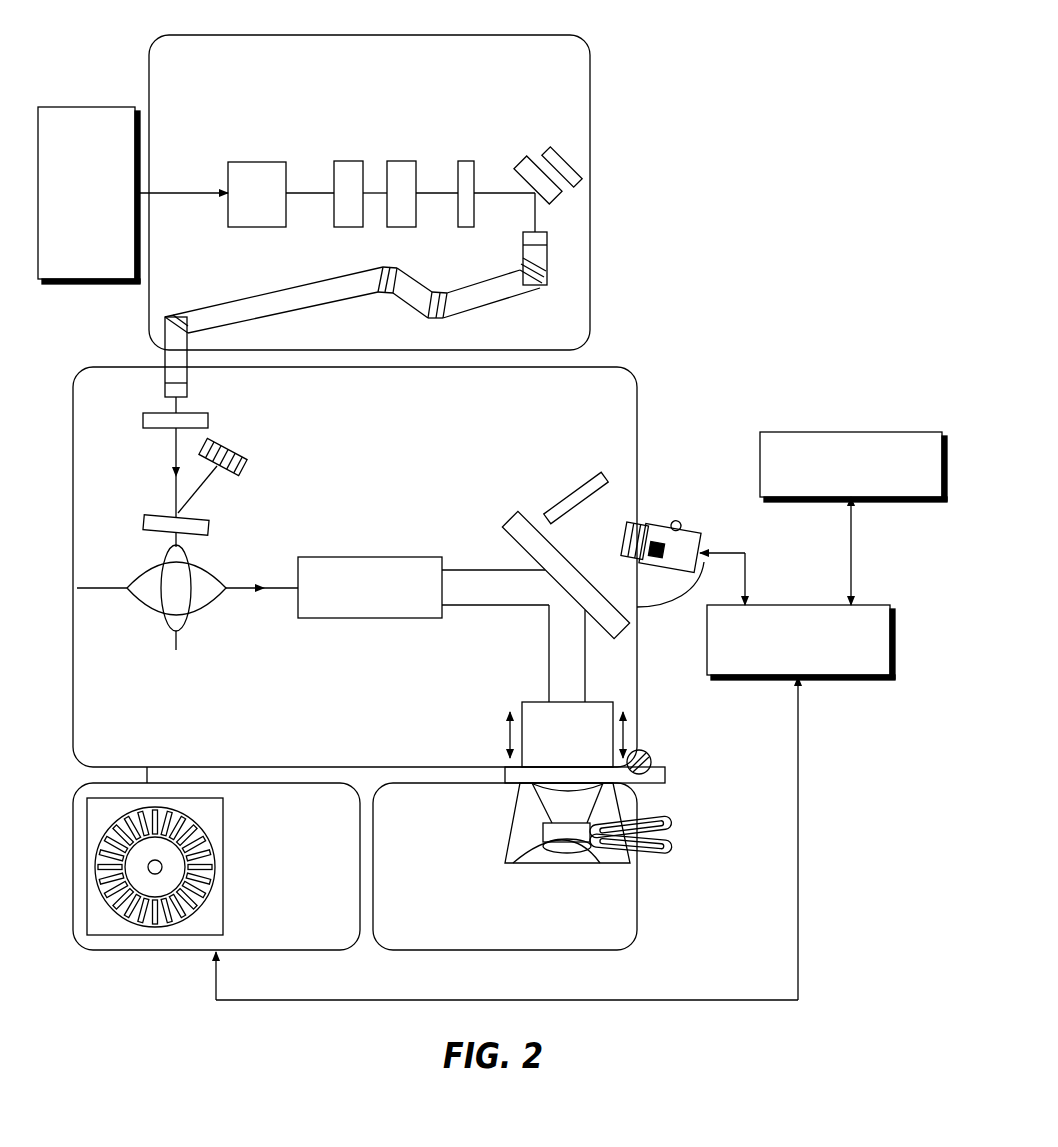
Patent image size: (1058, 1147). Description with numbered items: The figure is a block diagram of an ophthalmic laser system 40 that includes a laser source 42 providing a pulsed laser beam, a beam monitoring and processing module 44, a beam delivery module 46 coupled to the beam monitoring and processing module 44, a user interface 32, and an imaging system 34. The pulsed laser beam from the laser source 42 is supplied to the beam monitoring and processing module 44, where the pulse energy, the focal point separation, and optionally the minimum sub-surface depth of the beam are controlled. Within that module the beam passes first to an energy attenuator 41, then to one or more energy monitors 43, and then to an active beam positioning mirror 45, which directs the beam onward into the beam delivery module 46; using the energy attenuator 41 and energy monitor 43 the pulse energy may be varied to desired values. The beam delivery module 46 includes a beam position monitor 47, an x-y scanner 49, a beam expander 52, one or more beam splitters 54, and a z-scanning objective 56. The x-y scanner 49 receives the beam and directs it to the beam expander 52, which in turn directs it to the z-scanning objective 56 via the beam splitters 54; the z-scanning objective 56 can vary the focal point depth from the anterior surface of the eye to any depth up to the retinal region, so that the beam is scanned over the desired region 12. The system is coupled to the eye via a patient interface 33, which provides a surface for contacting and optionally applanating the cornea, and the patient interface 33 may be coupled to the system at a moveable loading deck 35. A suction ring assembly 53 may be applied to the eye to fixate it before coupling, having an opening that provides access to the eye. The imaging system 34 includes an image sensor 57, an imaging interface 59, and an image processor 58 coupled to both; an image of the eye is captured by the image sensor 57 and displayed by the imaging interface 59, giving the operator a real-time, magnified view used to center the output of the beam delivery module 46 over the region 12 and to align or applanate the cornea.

The region 12 is at (569, 868).
The user interface 32 is at (110, 953).
The patient interface 33 is at (605, 812).
The imaging system 34 is at (747, 377).
The moveable loading deck 35 is at (657, 757).
The ophthalmic laser system 40 is at (652, 147).
The energy attenuator 41 is at (244, 210).
The laser source 42 is at (65, 105).
The energy monitor 43 is at (347, 160).
The beam monitoring and processing module 44 is at (172, 112).
The active beam positioning mirror 45 is at (565, 145).
The beam delivery module 46 is at (361, 455).
The beam position monitor 47 is at (248, 468).
The x-y scanner 49 is at (150, 622).
The beam expander 52 is at (357, 601).
The suction ring assembly 53 is at (670, 846).
The beam splitter 54 is at (518, 513).
The z-scanning objective 56 is at (495, 737).
The image sensor 57 is at (690, 520).
The image processor 58 is at (878, 605).
The imaging interface 59 is at (913, 430).